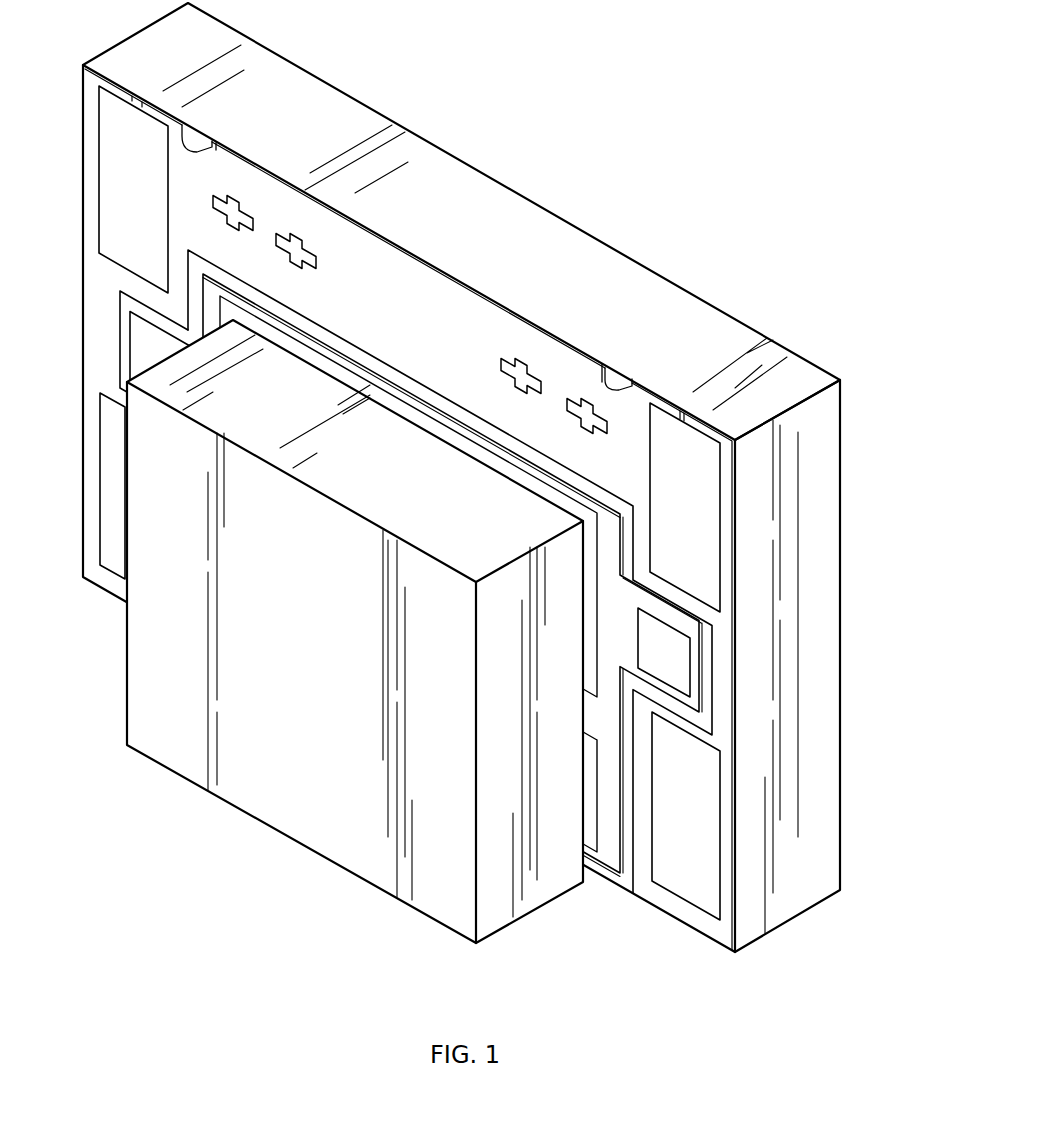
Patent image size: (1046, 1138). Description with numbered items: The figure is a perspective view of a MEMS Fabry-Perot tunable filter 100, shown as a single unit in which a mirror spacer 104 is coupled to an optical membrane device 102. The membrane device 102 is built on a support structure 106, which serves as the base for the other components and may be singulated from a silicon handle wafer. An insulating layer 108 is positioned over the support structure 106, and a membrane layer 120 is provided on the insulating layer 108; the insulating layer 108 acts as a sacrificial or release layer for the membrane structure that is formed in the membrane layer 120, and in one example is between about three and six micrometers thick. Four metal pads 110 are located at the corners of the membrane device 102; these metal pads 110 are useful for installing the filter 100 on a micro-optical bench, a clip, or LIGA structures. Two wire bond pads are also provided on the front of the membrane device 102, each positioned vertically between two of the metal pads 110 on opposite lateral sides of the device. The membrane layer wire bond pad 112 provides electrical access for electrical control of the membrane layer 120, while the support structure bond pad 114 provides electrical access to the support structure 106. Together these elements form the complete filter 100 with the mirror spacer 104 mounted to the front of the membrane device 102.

The Fabry-Perot tunable filter 100 is at (737, 50).
The optical membrane device 102 is at (702, 297).
The mirror spacer 104 is at (432, 902).
The support structure 106 is at (324, 108).
The insulating layer 108 is at (361, 353).
The metal pads 110 is at (115, 160).
The membrane layer wire bond pad 112 is at (665, 655).
The support structure bond pad 114 is at (150, 355).
The membrane layer 120 is at (425, 405).